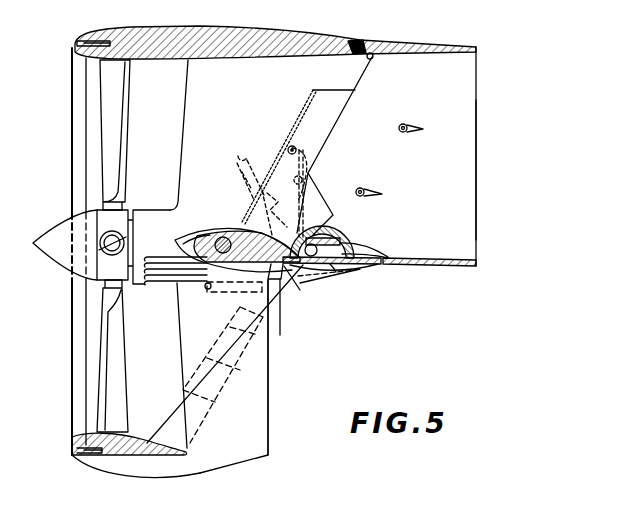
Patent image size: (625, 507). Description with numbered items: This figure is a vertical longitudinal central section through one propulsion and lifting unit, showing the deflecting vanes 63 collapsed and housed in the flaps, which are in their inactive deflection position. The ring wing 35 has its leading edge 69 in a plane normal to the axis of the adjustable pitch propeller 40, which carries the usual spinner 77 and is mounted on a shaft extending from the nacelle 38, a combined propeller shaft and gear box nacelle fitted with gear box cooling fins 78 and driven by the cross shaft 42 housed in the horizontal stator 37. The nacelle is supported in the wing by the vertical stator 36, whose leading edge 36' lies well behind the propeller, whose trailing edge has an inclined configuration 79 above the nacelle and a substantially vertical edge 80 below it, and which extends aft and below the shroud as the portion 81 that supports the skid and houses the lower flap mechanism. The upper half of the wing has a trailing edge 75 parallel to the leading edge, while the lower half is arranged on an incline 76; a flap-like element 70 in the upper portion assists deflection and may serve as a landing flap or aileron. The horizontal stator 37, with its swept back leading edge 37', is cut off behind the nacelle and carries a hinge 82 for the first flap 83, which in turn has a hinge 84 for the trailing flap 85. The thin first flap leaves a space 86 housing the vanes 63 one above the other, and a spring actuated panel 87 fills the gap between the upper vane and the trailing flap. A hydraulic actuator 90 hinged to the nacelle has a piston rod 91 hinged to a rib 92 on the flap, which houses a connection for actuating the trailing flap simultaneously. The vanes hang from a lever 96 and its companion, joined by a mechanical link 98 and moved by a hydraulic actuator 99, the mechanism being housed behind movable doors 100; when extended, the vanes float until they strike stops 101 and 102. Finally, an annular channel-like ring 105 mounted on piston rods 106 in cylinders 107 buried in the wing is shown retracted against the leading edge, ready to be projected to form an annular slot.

The ring wing 35 is at (483, 43).
The vertical stator 36 is at (234, 276).
The leading edge of vertical stator 36' is at (169, 254).
The horizontal stator 37 is at (237, 240).
The leading edge of horizontal stator 37' is at (188, 231).
The nacelle 38 is at (155, 214).
The controllable pitch propeller 40 is at (129, 165).
The cross shaft 42 is at (222, 237).
The deflecting vanes 63 is at (338, 236).
The leading edge of ring wing 69 is at (72, 175).
The flap-like element 70 is at (417, 43).
The trailing edge 75 is at (476, 175).
The incline 76 is at (280, 326).
The spinner 77 is at (65, 245).
The gear box cooling fins 78 is at (158, 281).
The inclined configuration 79 is at (371, 62).
The substantially vertical edge 80 is at (268, 394).
The portion of vertical stator 81 is at (143, 468).
The hinge 82 is at (298, 290).
The first flap 83 is at (337, 268).
The hinge 84 is at (378, 265).
The trailing flap 85 is at (430, 254).
The space 86 is at (353, 267).
The panel 87 is at (356, 247).
The hydraulic actuator 90 is at (214, 291).
The piston rod 91 is at (285, 300).
The rib 92 is at (306, 277).
The lever 96 is at (317, 202).
The mechanical link 98 is at (298, 163).
The hydraulic actuator 99 is at (258, 168).
The movable doors 100 is at (327, 138).
The stop 101 is at (408, 126).
The stop 102 is at (367, 188).
The annular channel-like ring 105 is at (73, 342).
The piston rods 106 is at (80, 451).
The cylinders 107 is at (103, 454).